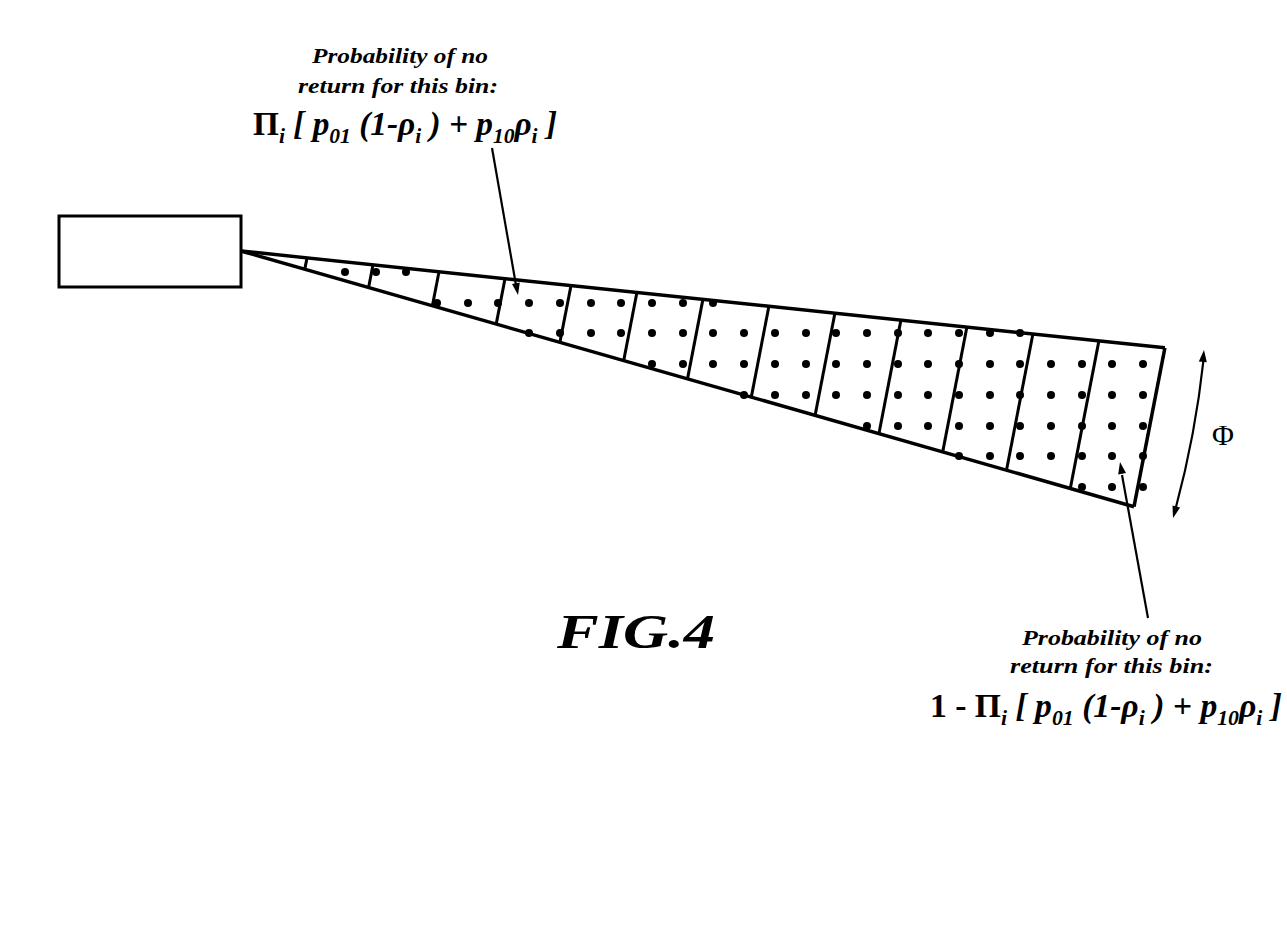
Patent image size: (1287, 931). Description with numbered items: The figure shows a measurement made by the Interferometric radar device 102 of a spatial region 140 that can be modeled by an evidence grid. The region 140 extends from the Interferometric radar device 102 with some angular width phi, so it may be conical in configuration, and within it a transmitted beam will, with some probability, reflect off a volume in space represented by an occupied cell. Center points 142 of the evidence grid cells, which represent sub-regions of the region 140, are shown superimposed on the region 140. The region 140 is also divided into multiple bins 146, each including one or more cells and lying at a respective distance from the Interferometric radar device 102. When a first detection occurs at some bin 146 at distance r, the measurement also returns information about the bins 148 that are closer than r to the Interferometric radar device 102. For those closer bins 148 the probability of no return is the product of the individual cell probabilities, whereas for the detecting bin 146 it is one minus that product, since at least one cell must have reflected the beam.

The Interferometric radar device 102 is at (168, 264).
The spatial region 140 is at (966, 145).
The center points of cells 142 is at (591, 304).
The bin 146 is at (879, 314).
The bins at a distance less than r 148 is at (641, 366).